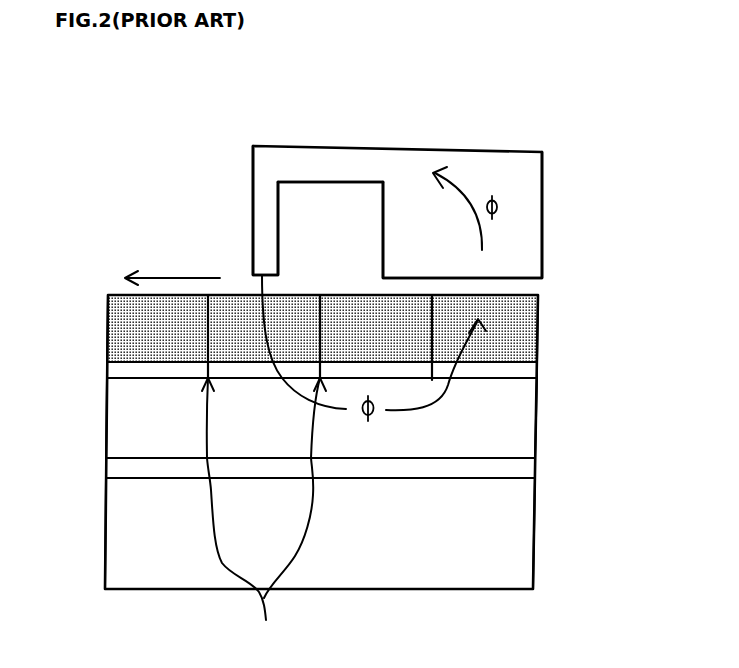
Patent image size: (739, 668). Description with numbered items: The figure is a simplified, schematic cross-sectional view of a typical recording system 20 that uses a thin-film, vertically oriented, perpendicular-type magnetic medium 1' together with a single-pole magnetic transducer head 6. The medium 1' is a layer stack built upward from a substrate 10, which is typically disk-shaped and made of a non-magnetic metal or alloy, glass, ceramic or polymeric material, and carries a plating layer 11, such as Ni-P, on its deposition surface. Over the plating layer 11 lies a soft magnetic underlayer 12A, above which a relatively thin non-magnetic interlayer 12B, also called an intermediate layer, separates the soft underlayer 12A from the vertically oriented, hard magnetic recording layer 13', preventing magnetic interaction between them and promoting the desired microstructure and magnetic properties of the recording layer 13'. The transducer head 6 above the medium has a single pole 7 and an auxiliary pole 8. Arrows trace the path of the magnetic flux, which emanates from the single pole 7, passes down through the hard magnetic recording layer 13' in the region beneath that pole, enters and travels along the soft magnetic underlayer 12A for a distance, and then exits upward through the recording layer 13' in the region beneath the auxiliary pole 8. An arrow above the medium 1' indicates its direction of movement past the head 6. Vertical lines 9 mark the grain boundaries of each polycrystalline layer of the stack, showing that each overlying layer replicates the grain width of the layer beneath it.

The recording system 20 is at (539, 121).
The single-pole magnetic transducer head 6 is at (308, 142).
The single pole 7 is at (251, 216).
The auxiliary pole 8 is at (543, 218).
The perpendicular-type magnetic medium 1' is at (286, 424).
The hard magnetic recording layer 13' is at (358, 337).
The non-magnetic interlayer 12B is at (538, 382).
The soft magnetic underlayer 12A is at (538, 425).
The plating layer 11 is at (536, 475).
The substrate 10 is at (534, 545).
The vertical lines 9 is at (264, 514).